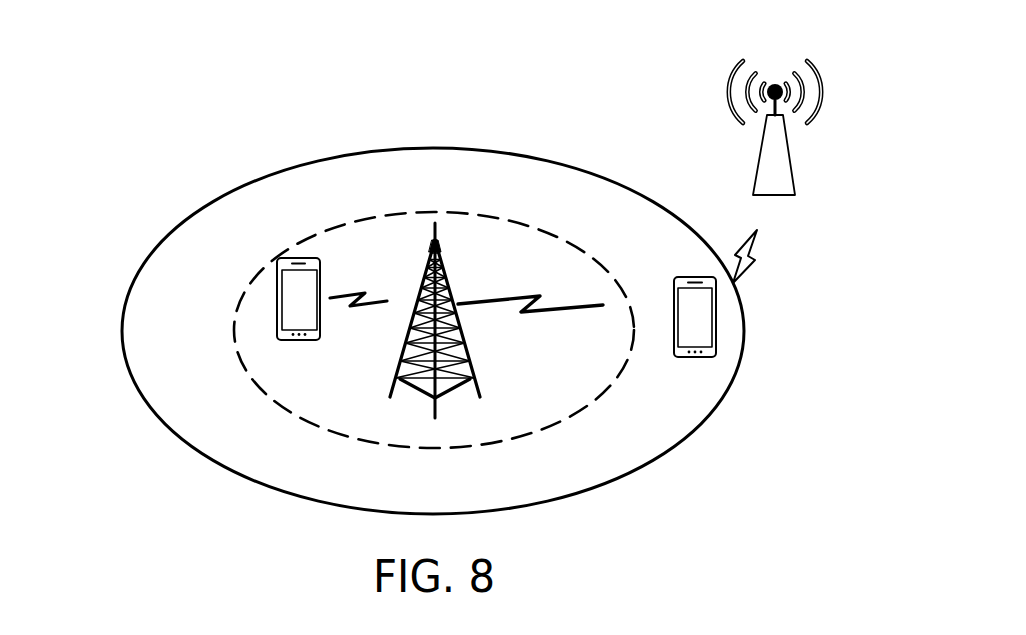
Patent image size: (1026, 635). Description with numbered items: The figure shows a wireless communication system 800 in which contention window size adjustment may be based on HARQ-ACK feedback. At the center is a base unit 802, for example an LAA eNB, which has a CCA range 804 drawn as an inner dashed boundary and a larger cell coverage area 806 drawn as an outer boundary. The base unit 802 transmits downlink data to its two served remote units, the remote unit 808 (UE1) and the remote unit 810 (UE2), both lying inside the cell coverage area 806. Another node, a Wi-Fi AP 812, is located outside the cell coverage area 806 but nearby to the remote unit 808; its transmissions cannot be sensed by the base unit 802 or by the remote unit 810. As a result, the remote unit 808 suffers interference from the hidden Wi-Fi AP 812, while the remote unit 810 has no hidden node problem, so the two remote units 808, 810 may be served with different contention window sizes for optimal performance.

The wireless communication system 800 is at (108, 132).
The base unit 802 is at (469, 377).
The CCA range 804 is at (235, 334).
The cell coverage area 806 is at (122, 334).
The remote unit 808 is at (676, 316).
The remote unit 810 is at (280, 298).
The Wi-Fi AP 812 is at (790, 158).